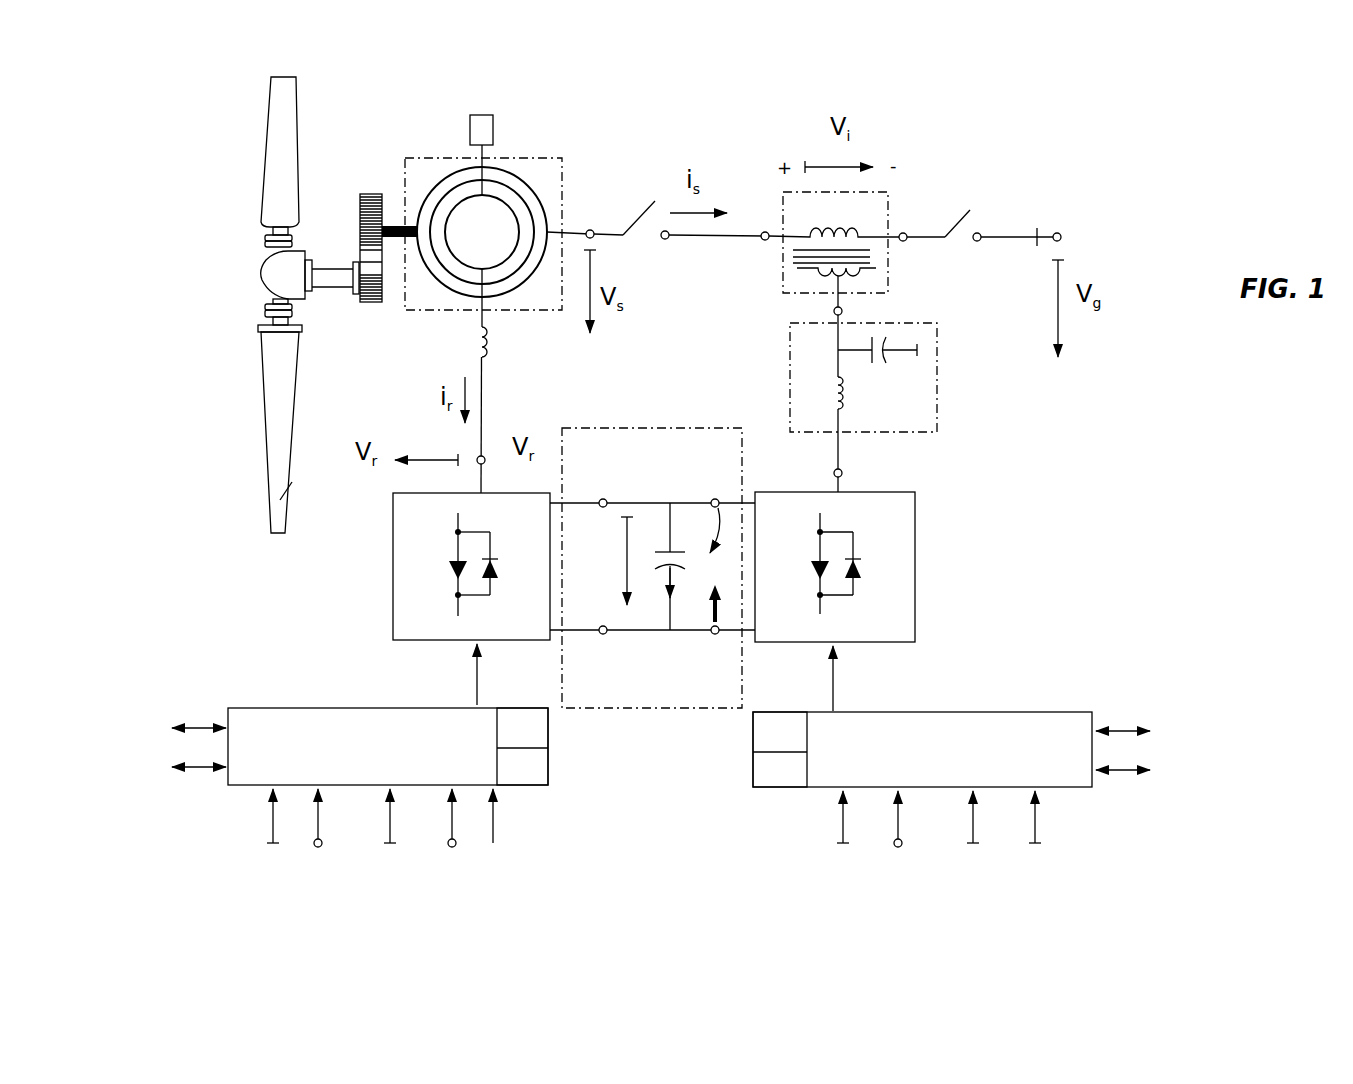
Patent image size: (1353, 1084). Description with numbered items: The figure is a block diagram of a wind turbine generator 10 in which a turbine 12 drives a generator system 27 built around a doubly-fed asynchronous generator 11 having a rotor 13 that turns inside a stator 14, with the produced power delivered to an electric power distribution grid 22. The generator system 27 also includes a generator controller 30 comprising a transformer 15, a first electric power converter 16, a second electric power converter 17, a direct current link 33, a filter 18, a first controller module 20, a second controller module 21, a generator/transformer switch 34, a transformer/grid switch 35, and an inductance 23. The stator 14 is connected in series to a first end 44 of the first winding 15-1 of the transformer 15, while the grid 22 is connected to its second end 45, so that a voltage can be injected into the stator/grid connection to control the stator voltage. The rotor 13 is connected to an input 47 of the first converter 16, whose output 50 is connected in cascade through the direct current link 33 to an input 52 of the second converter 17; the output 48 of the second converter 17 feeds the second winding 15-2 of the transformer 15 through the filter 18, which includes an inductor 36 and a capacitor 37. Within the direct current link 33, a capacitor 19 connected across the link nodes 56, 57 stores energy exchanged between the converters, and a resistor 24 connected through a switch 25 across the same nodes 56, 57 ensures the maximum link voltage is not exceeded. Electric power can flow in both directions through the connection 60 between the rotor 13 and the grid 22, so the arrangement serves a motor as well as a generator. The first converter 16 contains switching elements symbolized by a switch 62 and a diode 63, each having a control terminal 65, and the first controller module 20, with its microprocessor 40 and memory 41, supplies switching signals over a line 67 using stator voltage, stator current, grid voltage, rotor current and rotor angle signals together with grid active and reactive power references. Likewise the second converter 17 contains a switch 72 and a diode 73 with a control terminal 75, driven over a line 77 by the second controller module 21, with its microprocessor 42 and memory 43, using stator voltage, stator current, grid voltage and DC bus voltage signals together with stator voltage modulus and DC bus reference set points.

The wind turbine generator 10 is at (1160, 180).
The generator 11 is at (562, 192).
The turbine 12 is at (268, 188).
The rotor 13 is at (482, 232).
The stator 14 is at (496, 217).
The transformer 15 is at (834, 241).
The first winding 15-1 is at (856, 235).
The second winding 15-2 is at (812, 274).
The first electric power converter 16 is at (434, 566).
The second electric power converter 17 is at (861, 567).
The filter 18 is at (873, 373).
The capacitor 19 is at (662, 548).
The first controller module 20 is at (240, 708).
The second controller module 21 is at (979, 776).
The power grid 22 is at (1060, 230).
The inductance 23 is at (463, 355).
The resistor 24 is at (705, 602).
The switch 25 is at (724, 532).
The generator system 27 is at (370, 138).
The controller 30 is at (1167, 868).
The direct current link 33 is at (661, 589).
The generator/transformer switch 34 is at (645, 200).
The transformer/grid switch 35 is at (972, 204).
The inductor 36 is at (832, 396).
The capacitor 37 is at (886, 363).
The microprocessor 40 is at (548, 775).
The memory 41 is at (512, 708).
The microprocessor 42 is at (758, 787).
The memory 43 is at (767, 712).
The first end 44 is at (760, 242).
The second end 45 is at (904, 242).
The input 47 is at (485, 455).
The output 48 is at (843, 476).
The output 50 is at (603, 498).
The input 52 is at (715, 498).
The direct current link node 56 is at (712, 500).
The direct current link node 57 is at (628, 633).
The connection 60 is at (1024, 533).
The switch 62 is at (448, 562).
The diode 63 is at (494, 572).
The control terminal 65 is at (462, 612).
The line 67 is at (472, 688).
The switch 72 is at (812, 562).
The diode 73 is at (856, 575).
The control terminal 75 is at (824, 612).
The line 77 is at (836, 680).